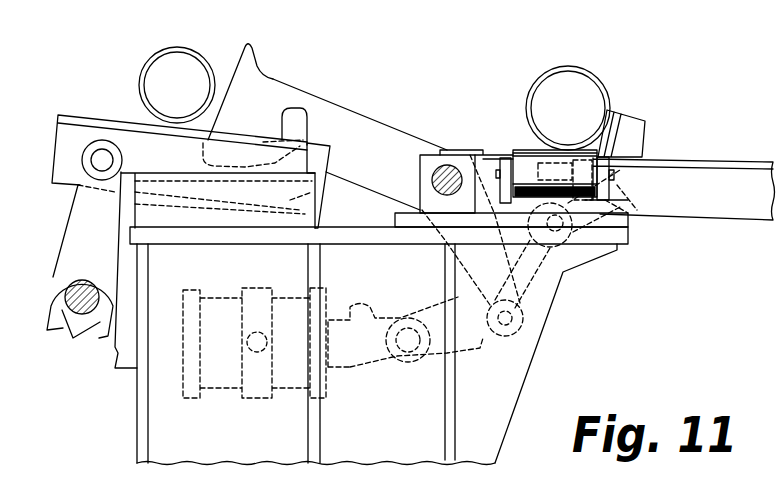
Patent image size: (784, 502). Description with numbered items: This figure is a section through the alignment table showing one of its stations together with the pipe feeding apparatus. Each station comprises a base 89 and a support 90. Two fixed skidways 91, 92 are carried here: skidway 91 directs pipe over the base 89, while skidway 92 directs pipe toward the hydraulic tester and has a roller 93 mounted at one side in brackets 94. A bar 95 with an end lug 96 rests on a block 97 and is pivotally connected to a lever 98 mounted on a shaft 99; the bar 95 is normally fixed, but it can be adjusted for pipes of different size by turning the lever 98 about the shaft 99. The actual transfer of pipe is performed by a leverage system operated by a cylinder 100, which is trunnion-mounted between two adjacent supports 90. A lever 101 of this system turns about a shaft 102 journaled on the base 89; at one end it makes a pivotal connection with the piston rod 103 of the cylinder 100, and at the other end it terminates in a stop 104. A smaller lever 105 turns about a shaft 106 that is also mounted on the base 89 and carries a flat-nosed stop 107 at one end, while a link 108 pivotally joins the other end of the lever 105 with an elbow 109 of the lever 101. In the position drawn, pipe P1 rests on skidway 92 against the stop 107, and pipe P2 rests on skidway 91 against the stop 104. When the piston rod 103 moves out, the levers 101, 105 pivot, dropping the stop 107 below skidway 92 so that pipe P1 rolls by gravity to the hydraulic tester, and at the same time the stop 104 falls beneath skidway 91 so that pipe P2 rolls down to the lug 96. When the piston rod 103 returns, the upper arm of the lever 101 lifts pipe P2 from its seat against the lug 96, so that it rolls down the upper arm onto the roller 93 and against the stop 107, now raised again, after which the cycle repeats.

The base 89 is at (628, 244).
The support 90 is at (508, 403).
The fixed skidway 91 is at (58, 117).
The fixed skidway 92 is at (742, 143).
The roller 93 is at (532, 150).
The brackets 94 is at (500, 163).
The bar 95 is at (133, 148).
The end lug 96 is at (297, 110).
The block 97 is at (307, 222).
The lever 98 is at (77, 215).
The shaft 99 is at (80, 317).
The cylinder 100 is at (233, 388).
The lever 101 is at (372, 128).
The shaft 102 is at (450, 165).
The piston rod 103 is at (392, 360).
The stop 104 is at (247, 43).
The smaller lever 105 is at (632, 222).
The shaft 106 is at (620, 195).
The flat-nosed stop 107 is at (612, 105).
The link 108 is at (558, 293).
The elbow 109 is at (538, 328).
The pipe P1 is at (598, 89).
The pipe P2 is at (147, 58).